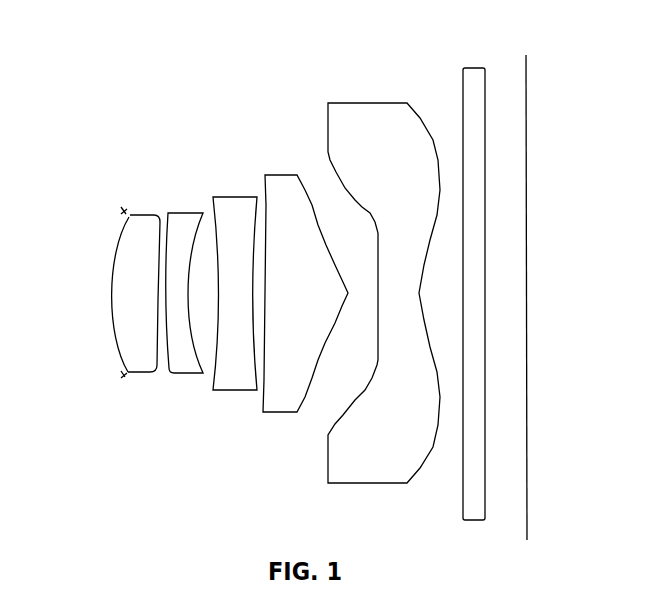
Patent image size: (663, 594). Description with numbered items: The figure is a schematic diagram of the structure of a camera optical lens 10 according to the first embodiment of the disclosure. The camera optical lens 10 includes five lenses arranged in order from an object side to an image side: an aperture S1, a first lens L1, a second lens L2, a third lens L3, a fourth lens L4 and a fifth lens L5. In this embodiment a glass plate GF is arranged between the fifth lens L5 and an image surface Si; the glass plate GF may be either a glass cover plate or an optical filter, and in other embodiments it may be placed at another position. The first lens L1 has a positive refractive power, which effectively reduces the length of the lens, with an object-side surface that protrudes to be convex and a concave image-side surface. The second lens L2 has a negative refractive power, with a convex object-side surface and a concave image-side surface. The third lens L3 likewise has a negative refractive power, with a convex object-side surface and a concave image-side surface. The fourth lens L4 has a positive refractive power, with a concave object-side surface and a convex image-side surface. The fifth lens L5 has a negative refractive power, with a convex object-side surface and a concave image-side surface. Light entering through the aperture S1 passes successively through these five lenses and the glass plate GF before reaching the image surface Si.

The camera optical lens 10 is at (286, 70).
The first lens L1 is at (105, 311).
The second lens L2 is at (184, 282).
The third lens L3 is at (235, 282).
The fourth lens L4 is at (305, 283).
The fifth lens L5 is at (384, 281).
The glass plate GF is at (473, 282).
The image surface Si is at (526, 285).
The aperture S1 is at (113, 373).